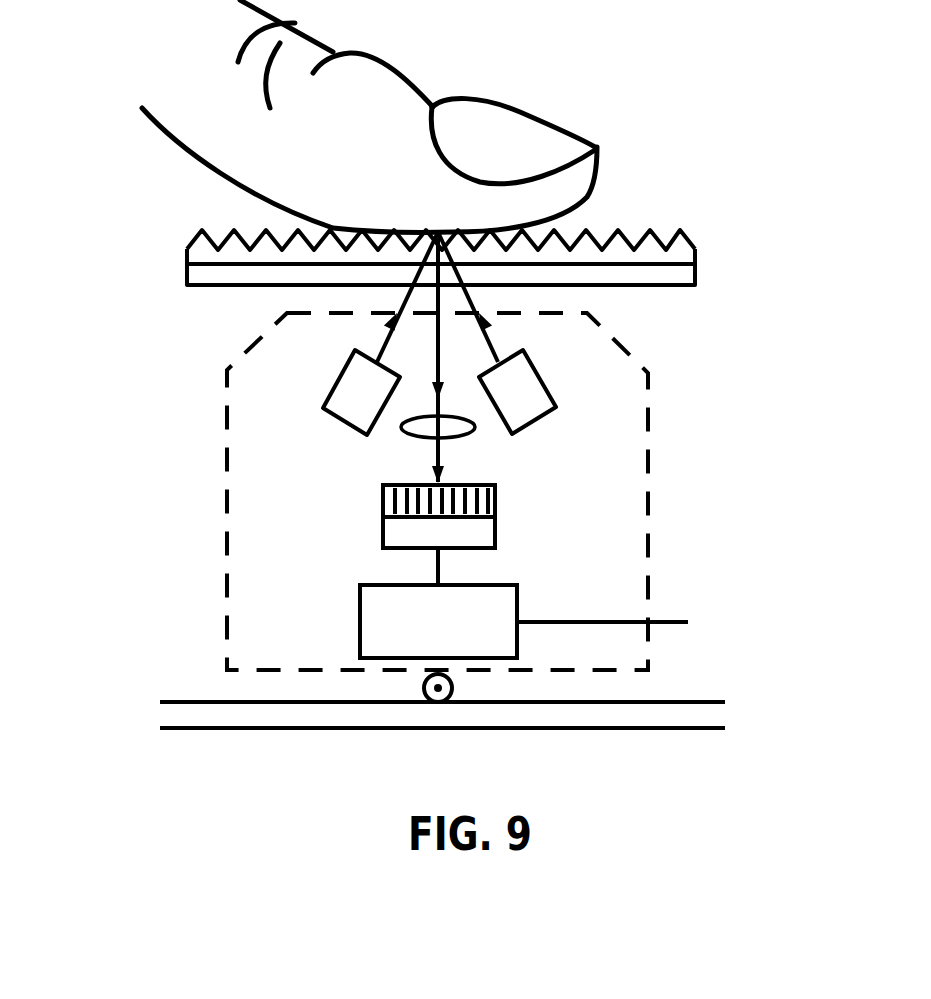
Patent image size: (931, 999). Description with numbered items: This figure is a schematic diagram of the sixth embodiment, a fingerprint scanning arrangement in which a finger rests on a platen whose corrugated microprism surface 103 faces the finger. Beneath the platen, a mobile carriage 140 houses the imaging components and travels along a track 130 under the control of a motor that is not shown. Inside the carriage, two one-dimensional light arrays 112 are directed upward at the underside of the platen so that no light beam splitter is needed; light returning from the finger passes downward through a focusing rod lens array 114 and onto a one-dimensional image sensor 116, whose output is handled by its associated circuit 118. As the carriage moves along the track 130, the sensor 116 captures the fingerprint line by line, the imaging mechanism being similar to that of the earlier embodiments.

The platen with corrugated surface 103 is at (180, 246).
The 1-D light array 112 is at (353, 403).
The focusing rod lens array 114 is at (463, 428).
The 1-D image sensor 116 is at (427, 528).
The associated circuit 118 is at (477, 633).
The track 130 is at (667, 720).
The housing 140 is at (648, 392).